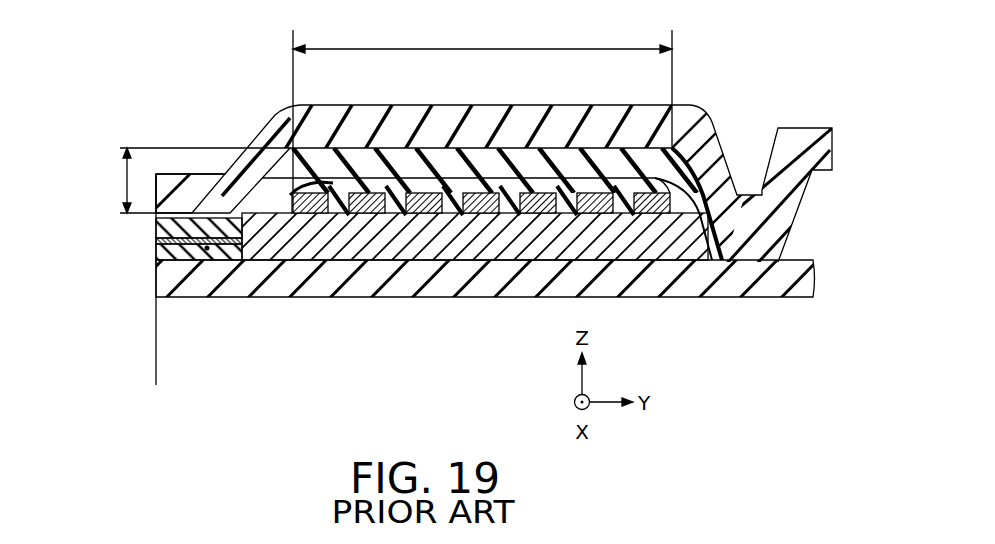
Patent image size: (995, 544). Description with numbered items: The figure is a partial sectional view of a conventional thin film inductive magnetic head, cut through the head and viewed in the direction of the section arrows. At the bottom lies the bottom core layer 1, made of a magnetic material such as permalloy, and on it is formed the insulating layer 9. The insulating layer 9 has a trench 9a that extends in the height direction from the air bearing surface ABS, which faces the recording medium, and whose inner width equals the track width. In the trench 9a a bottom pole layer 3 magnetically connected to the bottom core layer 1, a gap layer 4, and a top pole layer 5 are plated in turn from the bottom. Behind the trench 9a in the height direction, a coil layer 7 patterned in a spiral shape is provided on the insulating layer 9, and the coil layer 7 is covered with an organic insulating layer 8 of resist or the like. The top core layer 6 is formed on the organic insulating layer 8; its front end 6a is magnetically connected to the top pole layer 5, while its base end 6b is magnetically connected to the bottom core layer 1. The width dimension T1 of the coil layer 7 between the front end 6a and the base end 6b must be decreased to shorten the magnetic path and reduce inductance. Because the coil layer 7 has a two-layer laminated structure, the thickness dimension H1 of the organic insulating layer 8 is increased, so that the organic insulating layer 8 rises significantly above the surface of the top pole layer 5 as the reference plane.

The bottom core layer 1 is at (473, 283).
The bottom pole layer 3 is at (157, 255).
The gap layer 4 is at (157, 242).
The top pole layer 5 is at (160, 226).
The top core layer 6 is at (473, 174).
The front end 6a is at (178, 183).
The base end 6b is at (752, 210).
The coil layer 7 is at (481, 148).
The organic insulating layer 8 is at (598, 178).
The insulating layer 9 is at (358, 250).
The trench 9a is at (207, 248).
The thickness dimension H1 is at (191, 180).
The width dimension T1 is at (482, 115).
The air bearing surface ABS is at (156, 372).